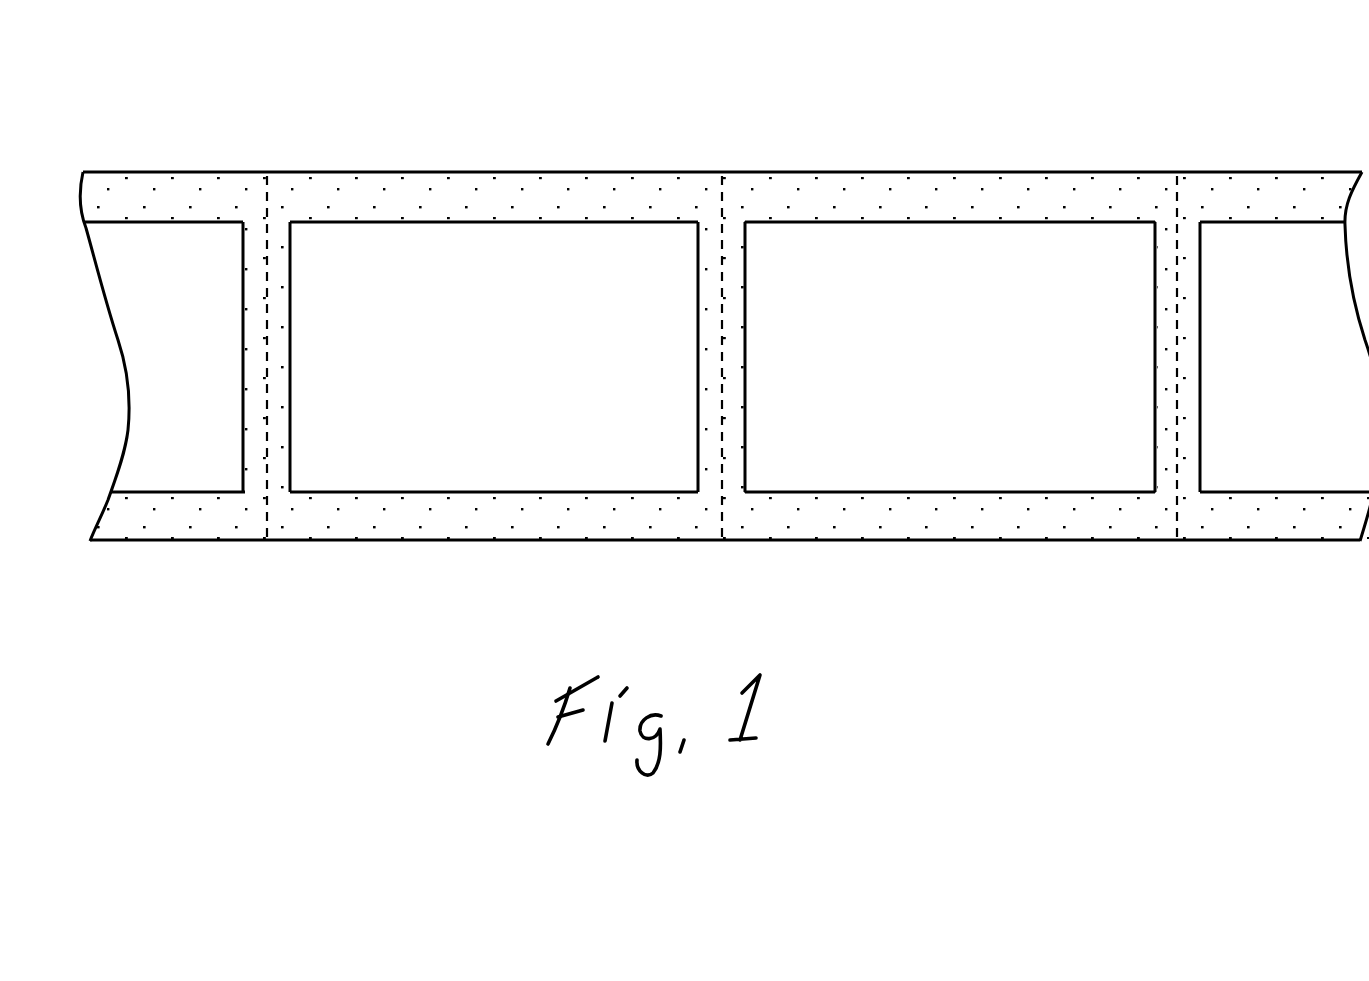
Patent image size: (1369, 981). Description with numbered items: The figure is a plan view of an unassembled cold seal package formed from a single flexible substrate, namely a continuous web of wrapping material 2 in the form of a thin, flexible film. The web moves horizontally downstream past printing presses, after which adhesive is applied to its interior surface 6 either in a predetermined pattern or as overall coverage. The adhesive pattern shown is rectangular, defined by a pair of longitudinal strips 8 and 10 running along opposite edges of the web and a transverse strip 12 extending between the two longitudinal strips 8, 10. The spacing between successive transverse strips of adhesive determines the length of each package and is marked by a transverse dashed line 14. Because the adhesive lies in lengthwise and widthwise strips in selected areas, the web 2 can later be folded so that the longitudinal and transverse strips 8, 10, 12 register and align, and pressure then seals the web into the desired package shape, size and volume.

The web of wrapping material 2 is at (724, 344).
The interior surface 6 is at (929, 297).
The longitudinal strip 8 is at (615, 195).
The longitudinal strip 10 is at (968, 522).
The transverse strip 12 is at (280, 376).
The transverse dashed line 14 is at (266, 268).